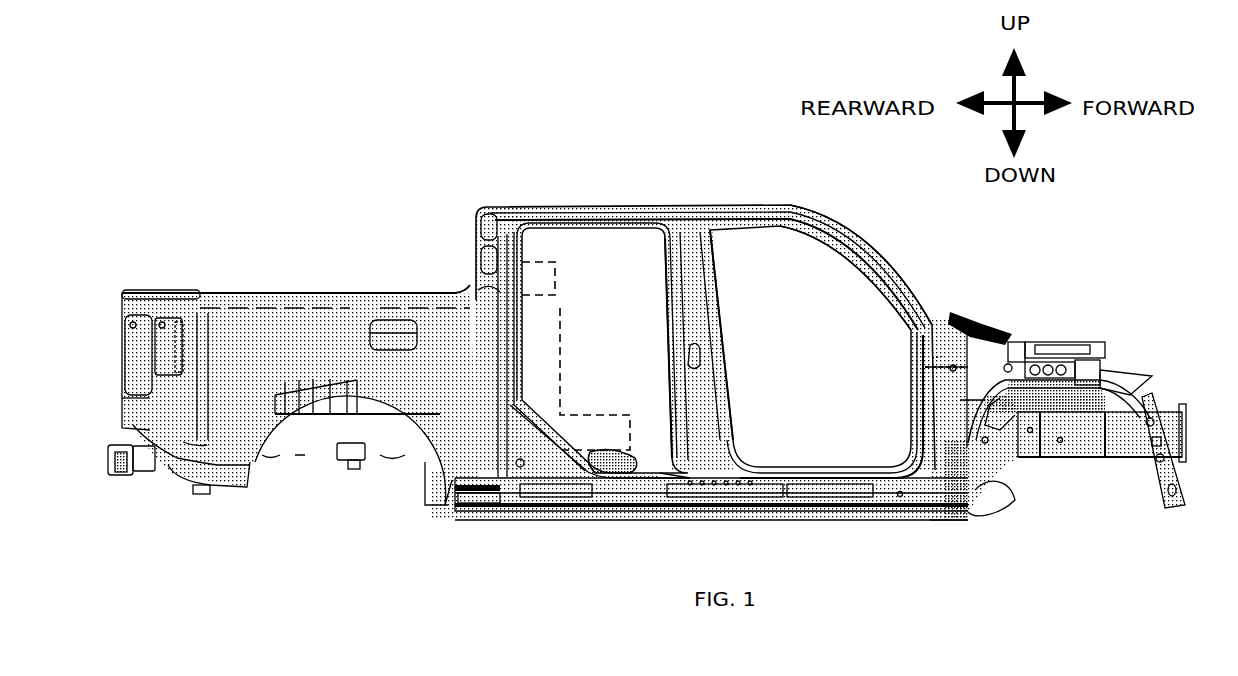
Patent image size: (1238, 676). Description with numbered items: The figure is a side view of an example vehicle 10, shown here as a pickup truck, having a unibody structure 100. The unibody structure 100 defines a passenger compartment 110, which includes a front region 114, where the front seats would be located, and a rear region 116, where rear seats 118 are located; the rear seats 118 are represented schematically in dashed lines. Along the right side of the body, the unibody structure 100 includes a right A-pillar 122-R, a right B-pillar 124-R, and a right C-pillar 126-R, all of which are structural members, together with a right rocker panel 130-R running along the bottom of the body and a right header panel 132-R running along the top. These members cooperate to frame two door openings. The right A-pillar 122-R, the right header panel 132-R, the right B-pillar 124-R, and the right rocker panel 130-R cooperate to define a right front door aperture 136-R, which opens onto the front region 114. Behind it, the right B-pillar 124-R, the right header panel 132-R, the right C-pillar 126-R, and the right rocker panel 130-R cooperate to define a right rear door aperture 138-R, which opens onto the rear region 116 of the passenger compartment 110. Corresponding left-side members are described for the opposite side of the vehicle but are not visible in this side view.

The vehicle 10 is at (256, 141).
The unibody structure 100 is at (241, 289).
The passenger compartment 110 is at (822, 268).
The front region 114 is at (841, 343).
The rear region 116 is at (624, 233).
The rear seats 118 is at (559, 300).
The right A-pillar 122-R is at (892, 275).
The right B-pillar 124-R is at (697, 300).
The right C-pillar 126-R is at (493, 243).
The right rocker panel 130-R is at (630, 497).
The right header panel 132-R is at (586, 205).
The right front door aperture 136-R is at (920, 398).
The right rear door aperture 138-R is at (680, 400).